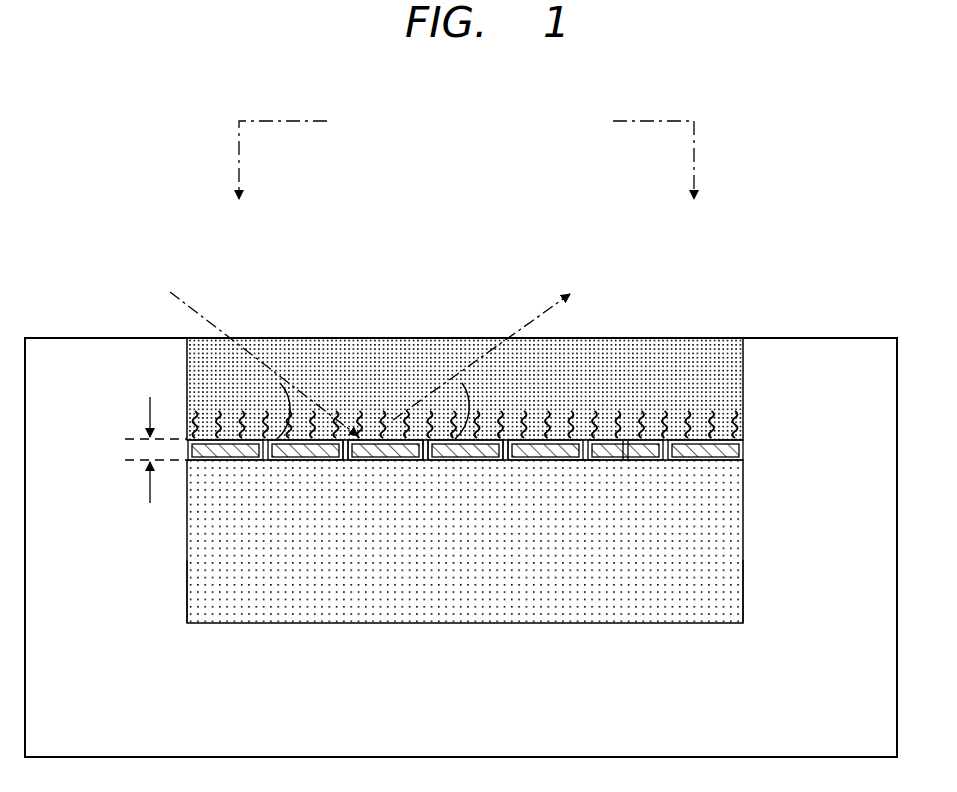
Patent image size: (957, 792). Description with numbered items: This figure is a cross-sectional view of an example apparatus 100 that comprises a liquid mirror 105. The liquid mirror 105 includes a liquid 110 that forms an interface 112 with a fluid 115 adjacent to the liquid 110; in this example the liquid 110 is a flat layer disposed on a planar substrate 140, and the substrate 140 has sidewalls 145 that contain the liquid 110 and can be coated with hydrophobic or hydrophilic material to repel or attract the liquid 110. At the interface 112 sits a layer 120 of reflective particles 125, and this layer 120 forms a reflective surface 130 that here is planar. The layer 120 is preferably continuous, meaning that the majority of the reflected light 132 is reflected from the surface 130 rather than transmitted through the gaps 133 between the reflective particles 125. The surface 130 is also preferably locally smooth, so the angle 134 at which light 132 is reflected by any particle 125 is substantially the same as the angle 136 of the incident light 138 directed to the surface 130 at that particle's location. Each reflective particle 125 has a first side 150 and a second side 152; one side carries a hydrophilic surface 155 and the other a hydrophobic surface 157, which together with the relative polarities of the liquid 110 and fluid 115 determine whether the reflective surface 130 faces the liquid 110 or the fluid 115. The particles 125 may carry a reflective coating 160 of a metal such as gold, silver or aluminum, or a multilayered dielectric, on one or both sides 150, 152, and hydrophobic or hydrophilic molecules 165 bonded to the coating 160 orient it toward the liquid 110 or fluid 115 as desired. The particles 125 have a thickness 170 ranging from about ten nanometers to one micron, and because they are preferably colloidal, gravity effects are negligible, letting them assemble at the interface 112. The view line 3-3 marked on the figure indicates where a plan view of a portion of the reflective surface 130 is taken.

The apparatus 100 is at (124, 99).
The liquid mirror 105 is at (717, 297).
The liquid 110 is at (473, 613).
The interface 112 is at (757, 437).
The fluid 115 is at (382, 378).
The layer of reflective particles 120 is at (136, 450).
The reflective particle 125 is at (288, 452).
The reflective surface 130 is at (371, 263).
The reflected light 132 is at (535, 323).
The gaps 133 is at (513, 462).
The reflection angle 134 is at (470, 400).
The incident angle 136 is at (283, 393).
The incident light 138 is at (200, 312).
The substrate 140 is at (872, 740).
The sidewalls 145 is at (187, 593).
The first side 150 is at (638, 432).
The second side 152 is at (628, 462).
The hydrophilic surface 155 is at (584, 416).
The hydrophobic surface 157 is at (581, 480).
The reflective coating 160 is at (338, 440).
The hydrophobic or hydrophilic molecules 165 is at (415, 413).
The thickness 170 is at (150, 487).
The view line 3- 3 is at (465, 182).